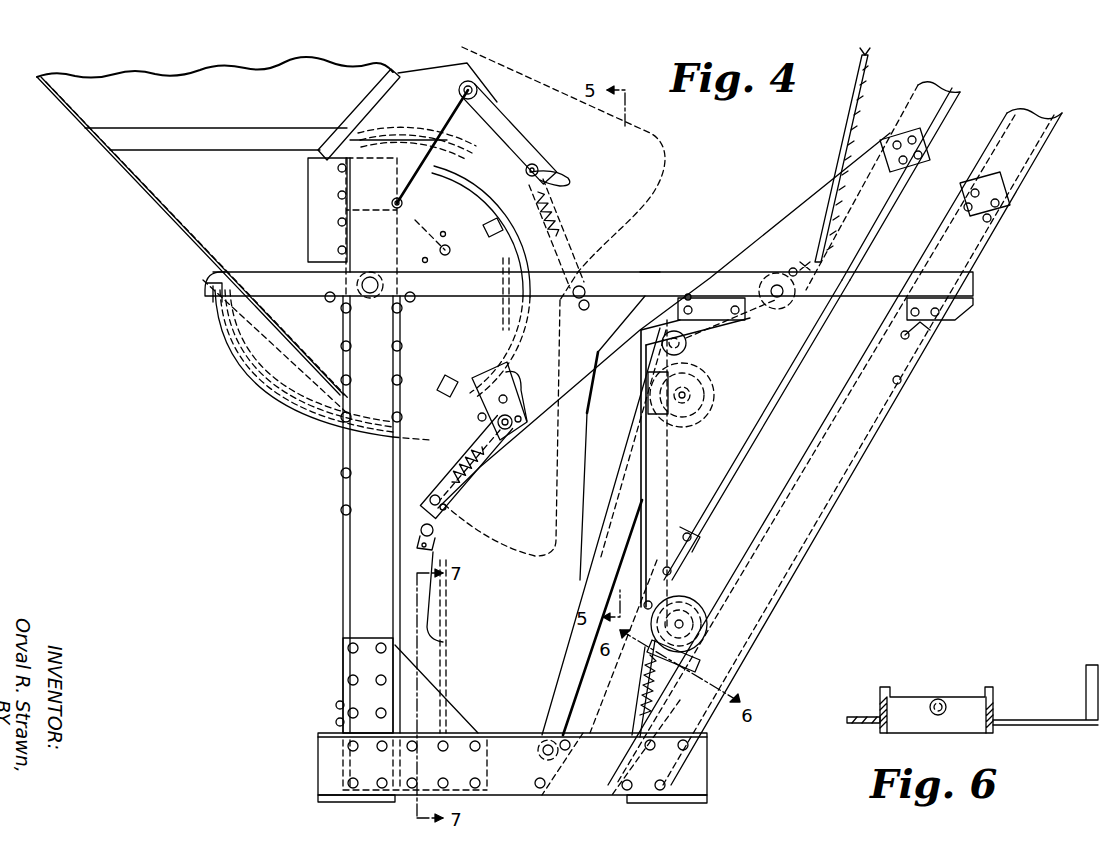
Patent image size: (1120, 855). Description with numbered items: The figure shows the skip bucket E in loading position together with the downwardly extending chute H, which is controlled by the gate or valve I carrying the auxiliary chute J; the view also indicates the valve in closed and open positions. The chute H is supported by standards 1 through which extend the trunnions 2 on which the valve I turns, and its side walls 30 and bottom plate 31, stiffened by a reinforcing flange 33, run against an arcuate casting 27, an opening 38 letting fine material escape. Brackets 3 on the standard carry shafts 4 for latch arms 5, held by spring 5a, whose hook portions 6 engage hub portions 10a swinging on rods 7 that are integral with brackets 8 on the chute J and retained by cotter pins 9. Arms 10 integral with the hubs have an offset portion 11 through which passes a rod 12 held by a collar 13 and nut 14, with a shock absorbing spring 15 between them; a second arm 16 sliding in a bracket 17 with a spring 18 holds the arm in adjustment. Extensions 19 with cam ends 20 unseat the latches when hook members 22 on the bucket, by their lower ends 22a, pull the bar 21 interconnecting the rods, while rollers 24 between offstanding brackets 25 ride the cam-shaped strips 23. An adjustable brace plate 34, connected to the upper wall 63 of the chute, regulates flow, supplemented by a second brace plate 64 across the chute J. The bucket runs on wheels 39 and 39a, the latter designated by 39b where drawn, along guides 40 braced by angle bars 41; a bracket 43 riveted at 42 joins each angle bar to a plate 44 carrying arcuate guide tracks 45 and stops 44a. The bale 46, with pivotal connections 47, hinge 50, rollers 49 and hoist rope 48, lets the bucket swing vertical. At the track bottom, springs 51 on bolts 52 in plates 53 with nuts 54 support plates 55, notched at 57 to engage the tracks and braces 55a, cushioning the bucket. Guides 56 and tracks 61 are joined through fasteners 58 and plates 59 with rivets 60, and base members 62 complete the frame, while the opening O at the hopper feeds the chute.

In FIG. 4, the standards 1 is at (360, 540).
In FIG. 4, the trunnions 2 is at (362, 285).
In FIG. 4, the brackets 3 is at (430, 120).
In FIG. 4, the shafts 4 is at (472, 84).
In FIG. 4, the latch arms 5 is at (513, 143).
In FIG. 4, the spring 5a is at (462, 82).
In FIG. 4, the hook portion 6 is at (568, 176).
In FIG. 4, the rods 7 is at (540, 166).
In FIG. 4, the brackets 8 is at (488, 405).
In FIG. 4, the cotter pins 9 is at (522, 425).
In FIG. 4, the arms 10 is at (557, 207).
In FIG. 4, the hub portions 10a is at (528, 162).
In FIG. 4, the offset portion 11 is at (567, 240).
In FIG. 4, the rod 12 is at (563, 227).
In FIG. 4, the collar 13 is at (507, 440).
In FIG. 4, the nut 14 is at (510, 432).
In FIG. 4, the shock absorbing spring 15 is at (548, 212).
In FIG. 4, the second arm 16 is at (468, 230).
In FIG. 4, the bracket 17 is at (482, 232).
In FIG. 4, the spring 18 is at (532, 206).
In FIG. 4, the extensions 19 is at (528, 190).
In FIG. 4, the cam ends 20 is at (505, 180).
In FIG. 4, the bar 21 is at (587, 283).
In FIG. 4, the hook members 22 is at (412, 537).
In FIG. 4, the lower ends 22a is at (452, 632).
In FIG. 4, the cam-shaped strips 23 is at (530, 558).
In FIG. 4, the rollers 24 is at (430, 500).
In FIG. 4, the offstanding brackets 25 is at (440, 508).
In FIG. 4, the casting 27 is at (497, 314).
In FIG. 4, the side walls 30 is at (250, 270).
In FIG. 4, the bottom plate 31 is at (210, 300).
In FIG. 4, the reinforcing flange 33 is at (205, 285).
In FIG. 4, the brace plate 34 is at (415, 222).
In FIG. 4, the opening 38 is at (340, 440).
In FIG. 4, the wheels 39 is at (690, 598).
In FIG. 4, the wheels 39a is at (720, 399).
In FIG. 4, the pulley hub 39b is at (712, 414).
In FIG. 4, the guides 40 is at (820, 500).
In FIG. 6, the guides 40 is at (1050, 726).
In FIG. 4, the angle bars 41 is at (657, 284).
In FIG. 4, the rivets 42 is at (689, 294).
In FIG. 4, the bracket 43 is at (702, 308).
In FIG. 4, the plate 44 is at (703, 474).
In FIG. 4, the stops 44a is at (664, 320).
In FIG. 4, the arcuate guide tracks 45 is at (804, 343).
In FIG. 4, the bale 46 is at (568, 657).
In FIG. 4, the pivotal connections 47 is at (545, 758).
In FIG. 4, the hoist rope 48 is at (868, 72).
In FIG. 4, the rollers 49 is at (795, 317).
In FIG. 4, the hinge 50 is at (688, 352).
In FIG. 4, the springs 51 is at (682, 684).
In FIG. 4, the bolt 52 is at (612, 780).
In FIG. 4, the plate 53 is at (675, 702).
In FIG. 4, the nut 54 is at (652, 722).
In FIG. 4, the plate 55 is at (698, 658).
In FIG. 6, the plate 55 is at (963, 686).
In FIG. 4, the braces 55a is at (605, 677).
In FIG. 6, the braces 55a is at (866, 723).
In FIG. 4, the guides 56 is at (938, 106).
In FIG. 6, the notches 57 is at (878, 690).
In FIG. 4, the bolts or rivets 58 is at (893, 130).
In FIG. 4, the plates 59 is at (1002, 192).
In FIG. 4, the bolts or rivets 60 is at (1010, 206).
In FIG. 4, the tracks 61 is at (1040, 135).
In FIG. 4, the base members 62 is at (697, 778).
In FIG. 4, the upper wall 63 is at (372, 120).
In FIG. 4, the second brace plate 64 is at (380, 120).
In FIG. 4, the chute H is at (190, 212).
In FIG. 4, the hopper opening O is at (90, 111).
In FIG. 4, the valve I is at (295, 398).
In FIG. 4, the auxiliary chute J is at (672, 155).
In FIG. 4, the skip bucket E is at (519, 614).